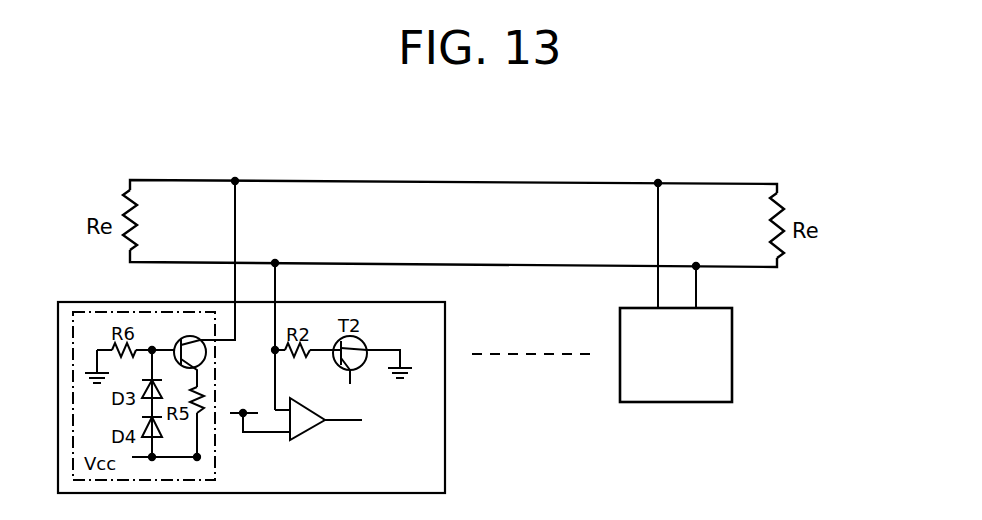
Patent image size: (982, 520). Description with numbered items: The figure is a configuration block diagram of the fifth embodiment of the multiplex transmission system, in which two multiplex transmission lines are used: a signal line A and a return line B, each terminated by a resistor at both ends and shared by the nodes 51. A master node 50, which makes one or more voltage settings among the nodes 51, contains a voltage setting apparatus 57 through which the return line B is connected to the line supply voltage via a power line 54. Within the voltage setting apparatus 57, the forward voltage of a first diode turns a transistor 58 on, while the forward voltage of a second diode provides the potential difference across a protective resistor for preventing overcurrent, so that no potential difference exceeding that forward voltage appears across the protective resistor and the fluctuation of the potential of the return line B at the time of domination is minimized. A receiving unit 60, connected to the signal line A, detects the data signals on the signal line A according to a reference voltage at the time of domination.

The master node 50 is at (446, 466).
The nodes 51 is at (695, 403).
The power line 54 is at (235, 221).
The voltage setting apparatus 57 is at (215, 462).
The transistor 58 is at (188, 334).
The receiving unit 60 is at (307, 425).
The signal line A is at (548, 264).
The return line B is at (549, 181).